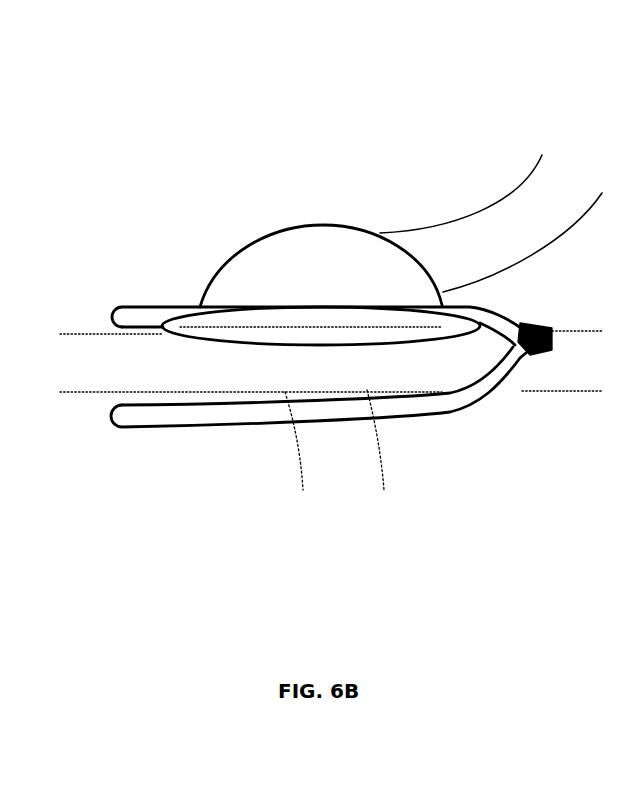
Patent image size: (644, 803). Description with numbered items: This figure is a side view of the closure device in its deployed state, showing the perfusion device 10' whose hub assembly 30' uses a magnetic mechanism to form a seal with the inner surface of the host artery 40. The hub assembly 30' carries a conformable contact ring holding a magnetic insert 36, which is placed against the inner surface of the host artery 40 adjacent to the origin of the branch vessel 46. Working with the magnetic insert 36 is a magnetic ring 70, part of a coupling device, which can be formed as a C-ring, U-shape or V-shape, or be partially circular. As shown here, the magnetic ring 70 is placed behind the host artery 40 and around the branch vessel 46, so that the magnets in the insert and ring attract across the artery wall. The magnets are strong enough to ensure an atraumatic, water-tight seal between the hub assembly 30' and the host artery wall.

The perfusion device 10' is at (491, 181).
The hub assembly 30' is at (317, 221).
The magnetic insert 36 is at (215, 327).
The host artery 40 is at (100, 353).
The branch vessel 46 is at (322, 450).
The magnetic ring 70 is at (525, 365).